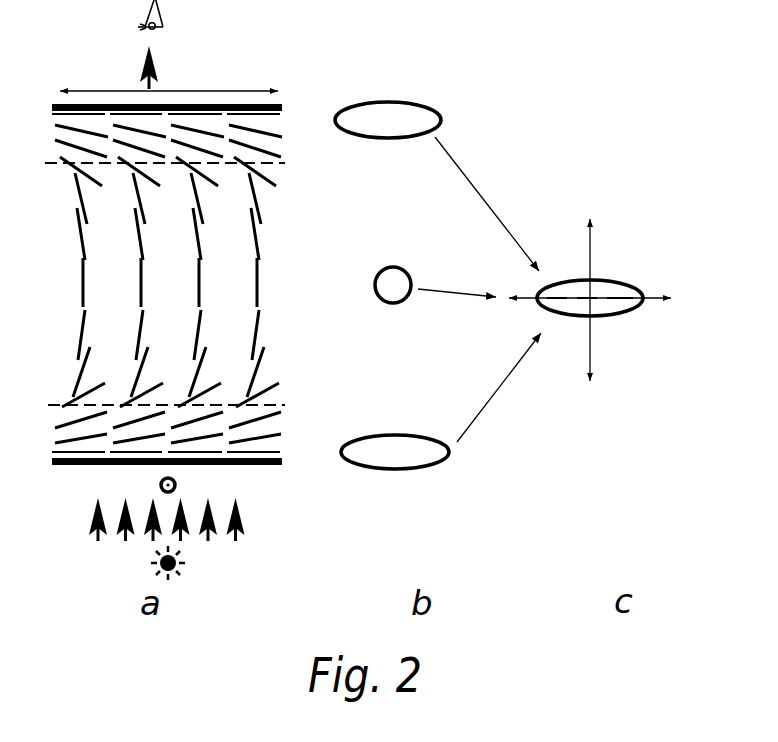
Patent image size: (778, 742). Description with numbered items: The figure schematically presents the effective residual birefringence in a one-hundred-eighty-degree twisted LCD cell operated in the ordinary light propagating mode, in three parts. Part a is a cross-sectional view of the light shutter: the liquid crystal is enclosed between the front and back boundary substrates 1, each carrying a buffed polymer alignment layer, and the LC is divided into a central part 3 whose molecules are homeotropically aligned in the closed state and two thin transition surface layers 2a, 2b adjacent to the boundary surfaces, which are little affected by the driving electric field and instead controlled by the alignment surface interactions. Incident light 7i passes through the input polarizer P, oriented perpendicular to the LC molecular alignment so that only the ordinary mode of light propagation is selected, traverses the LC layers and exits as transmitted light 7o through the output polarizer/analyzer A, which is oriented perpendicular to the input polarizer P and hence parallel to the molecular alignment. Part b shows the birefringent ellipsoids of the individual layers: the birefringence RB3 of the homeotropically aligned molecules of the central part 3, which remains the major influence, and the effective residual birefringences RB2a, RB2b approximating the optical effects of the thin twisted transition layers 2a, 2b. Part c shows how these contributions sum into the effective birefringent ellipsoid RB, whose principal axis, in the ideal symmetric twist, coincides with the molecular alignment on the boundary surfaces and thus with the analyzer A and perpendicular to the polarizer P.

The boundary substrate 1 is at (283, 108).
The transition surface layer 2b is at (292, 114).
The transition surface layer 2a is at (292, 407).
The central part of the LC layer 3 is at (294, 165).
The transmitted light 7o is at (161, 72).
The incident light 7i is at (243, 518).
The output polarizer/analyzer A is at (262, 89).
The input polarizer P is at (180, 485).
The residual birefringence RB2b is at (400, 115).
The birefringence of the homeotropically aligned LC molecules RB3 is at (393, 280).
The residual birefringence RB2a is at (402, 457).
The effective birefringent ellipsoid RB is at (610, 285).